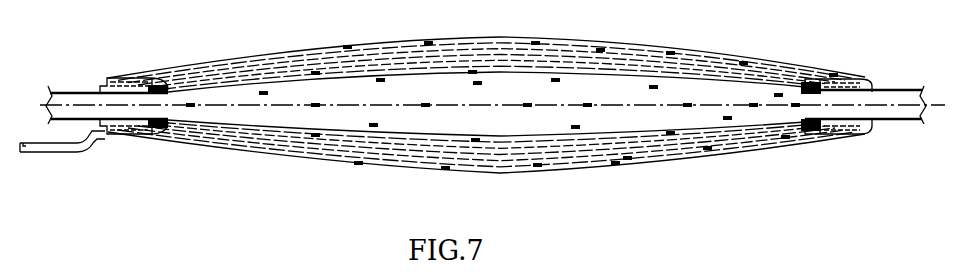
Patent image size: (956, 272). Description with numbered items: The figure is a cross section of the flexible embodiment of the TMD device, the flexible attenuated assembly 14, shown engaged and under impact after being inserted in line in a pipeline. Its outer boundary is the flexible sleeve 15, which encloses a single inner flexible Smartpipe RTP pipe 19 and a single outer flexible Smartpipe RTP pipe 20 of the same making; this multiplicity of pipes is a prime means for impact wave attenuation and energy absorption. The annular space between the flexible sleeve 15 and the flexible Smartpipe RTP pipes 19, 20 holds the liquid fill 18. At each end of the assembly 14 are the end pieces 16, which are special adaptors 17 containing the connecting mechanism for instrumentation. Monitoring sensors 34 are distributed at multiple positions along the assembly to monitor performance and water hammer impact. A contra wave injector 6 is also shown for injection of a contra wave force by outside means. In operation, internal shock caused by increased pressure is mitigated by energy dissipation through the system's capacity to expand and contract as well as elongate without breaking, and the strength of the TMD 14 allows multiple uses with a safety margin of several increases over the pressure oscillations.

The contra wave injector 6 is at (68, 148).
The flexible attenuated assembly 14 is at (563, 194).
The flexible sleeve 15 is at (557, 43).
The end pieces 16 is at (127, 92).
The special adaptors 17 is at (167, 140).
The liquid fill 18 is at (388, 58).
The inner flexible Smartpipe RTP pipe 19 is at (750, 132).
The outer flexible Smartpipe RTP pipe 20 is at (688, 133).
The monitoring sensors 34 is at (190, 104).